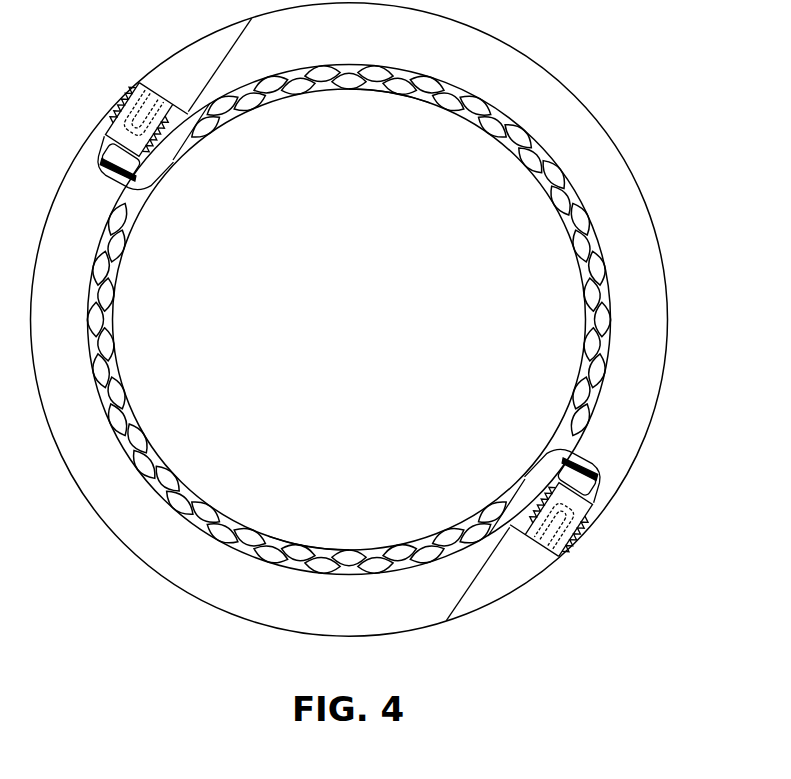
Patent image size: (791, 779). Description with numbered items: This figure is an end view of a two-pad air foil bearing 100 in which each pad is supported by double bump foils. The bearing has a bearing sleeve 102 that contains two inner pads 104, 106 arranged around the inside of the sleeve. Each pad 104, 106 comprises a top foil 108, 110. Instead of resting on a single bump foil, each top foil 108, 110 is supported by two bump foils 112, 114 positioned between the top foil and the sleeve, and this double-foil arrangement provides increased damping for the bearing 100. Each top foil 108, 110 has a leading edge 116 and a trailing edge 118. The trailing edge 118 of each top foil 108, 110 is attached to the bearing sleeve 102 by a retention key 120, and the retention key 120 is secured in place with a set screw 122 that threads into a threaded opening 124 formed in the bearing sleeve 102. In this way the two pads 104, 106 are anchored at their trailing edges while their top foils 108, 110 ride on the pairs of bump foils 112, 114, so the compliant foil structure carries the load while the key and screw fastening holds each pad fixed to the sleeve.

The two-pad air foil bearing 100 is at (360, 320).
The bearing sleeve 102 is at (658, 244).
The inner pad 104 is at (497, 152).
The inner pad 106 is at (187, 472).
The top foil 108 is at (410, 96).
The top foil 110 is at (250, 529).
The bump foil 112 is at (562, 172).
The bump foil 114 is at (572, 260).
The leading edge 116 is at (142, 216).
The trailing edge 118 is at (163, 187).
The retention key 120 is at (118, 176).
The set screw 122 is at (119, 119).
The threaded opening 124 is at (160, 86).